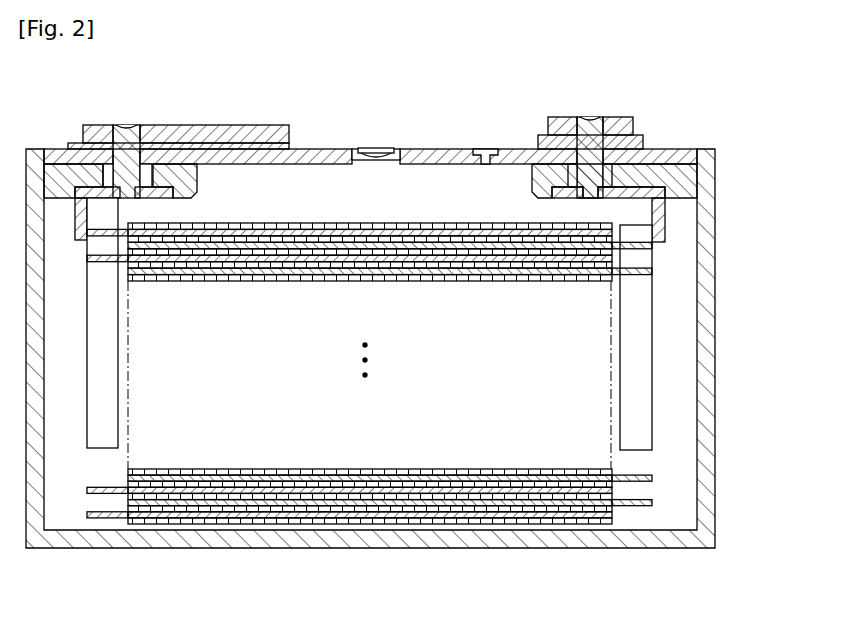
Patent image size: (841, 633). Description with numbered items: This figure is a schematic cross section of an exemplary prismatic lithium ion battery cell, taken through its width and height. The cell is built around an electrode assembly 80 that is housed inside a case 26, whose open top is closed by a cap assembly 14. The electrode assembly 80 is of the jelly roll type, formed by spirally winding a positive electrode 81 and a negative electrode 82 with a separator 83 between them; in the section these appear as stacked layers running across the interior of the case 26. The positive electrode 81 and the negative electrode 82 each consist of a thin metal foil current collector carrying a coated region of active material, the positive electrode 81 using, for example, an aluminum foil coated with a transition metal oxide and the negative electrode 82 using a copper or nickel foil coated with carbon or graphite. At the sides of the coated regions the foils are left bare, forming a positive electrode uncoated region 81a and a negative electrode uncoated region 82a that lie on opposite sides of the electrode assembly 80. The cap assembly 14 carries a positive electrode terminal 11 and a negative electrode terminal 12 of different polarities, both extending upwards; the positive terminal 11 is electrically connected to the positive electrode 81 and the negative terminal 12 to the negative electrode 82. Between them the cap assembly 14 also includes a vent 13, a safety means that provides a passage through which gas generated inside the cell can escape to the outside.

The positive electrode terminal 11 is at (616, 117).
The negative electrode terminal 12 is at (92, 125).
The vent 13 is at (391, 148).
The cap assembly 14 is at (444, 150).
The case 26 is at (707, 345).
The electrode assembly 80 is at (370, 419).
The positive electrode 81 is at (535, 505).
The positive electrode uncoated region 81a is at (636, 506).
The negative electrode 82 is at (212, 518).
The negative electrode uncoated region 82a is at (110, 518).
The separator 83 is at (353, 497).